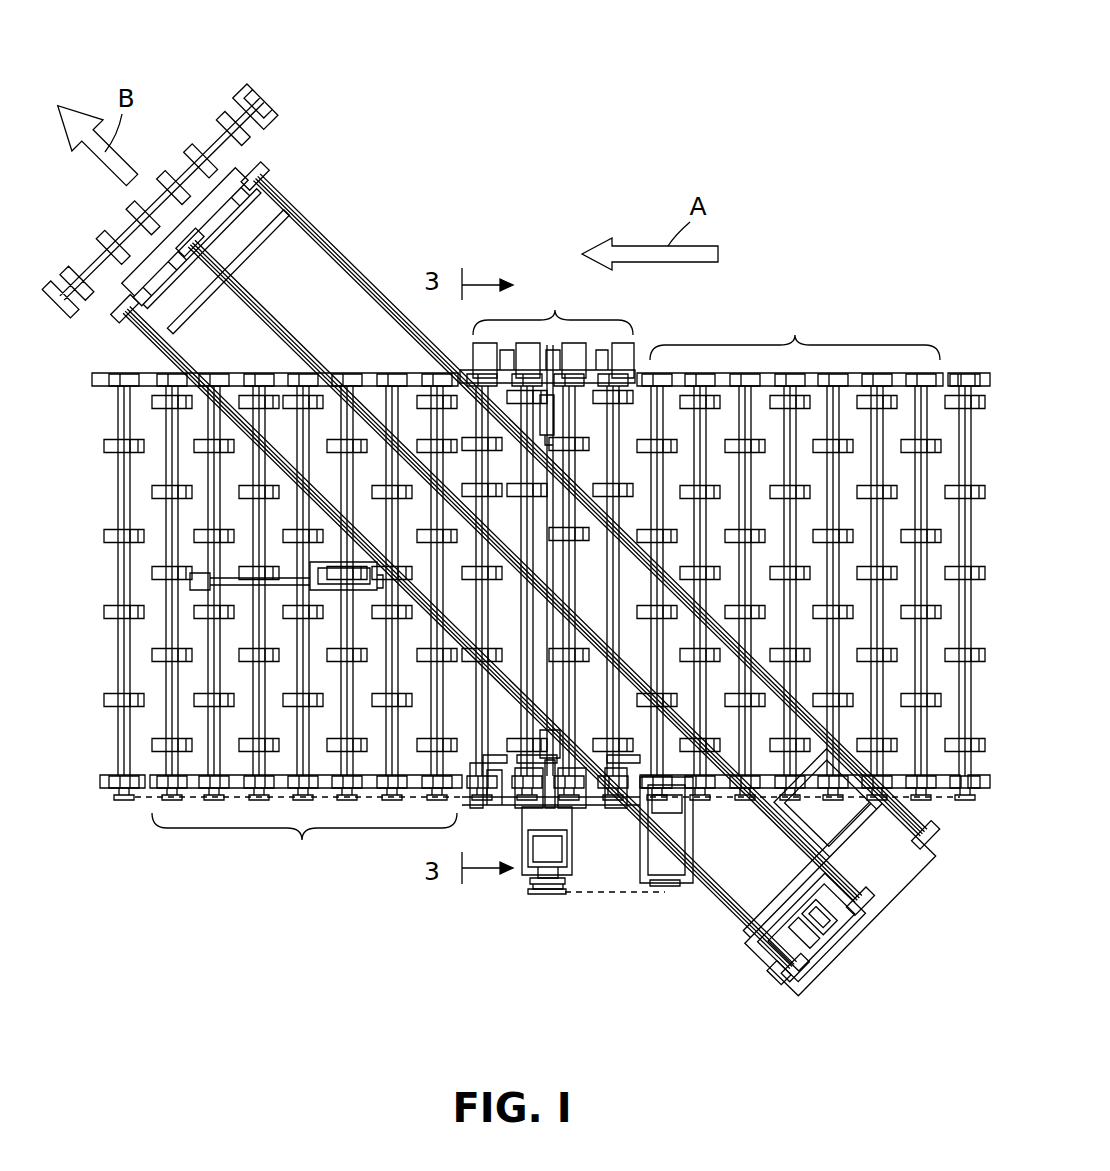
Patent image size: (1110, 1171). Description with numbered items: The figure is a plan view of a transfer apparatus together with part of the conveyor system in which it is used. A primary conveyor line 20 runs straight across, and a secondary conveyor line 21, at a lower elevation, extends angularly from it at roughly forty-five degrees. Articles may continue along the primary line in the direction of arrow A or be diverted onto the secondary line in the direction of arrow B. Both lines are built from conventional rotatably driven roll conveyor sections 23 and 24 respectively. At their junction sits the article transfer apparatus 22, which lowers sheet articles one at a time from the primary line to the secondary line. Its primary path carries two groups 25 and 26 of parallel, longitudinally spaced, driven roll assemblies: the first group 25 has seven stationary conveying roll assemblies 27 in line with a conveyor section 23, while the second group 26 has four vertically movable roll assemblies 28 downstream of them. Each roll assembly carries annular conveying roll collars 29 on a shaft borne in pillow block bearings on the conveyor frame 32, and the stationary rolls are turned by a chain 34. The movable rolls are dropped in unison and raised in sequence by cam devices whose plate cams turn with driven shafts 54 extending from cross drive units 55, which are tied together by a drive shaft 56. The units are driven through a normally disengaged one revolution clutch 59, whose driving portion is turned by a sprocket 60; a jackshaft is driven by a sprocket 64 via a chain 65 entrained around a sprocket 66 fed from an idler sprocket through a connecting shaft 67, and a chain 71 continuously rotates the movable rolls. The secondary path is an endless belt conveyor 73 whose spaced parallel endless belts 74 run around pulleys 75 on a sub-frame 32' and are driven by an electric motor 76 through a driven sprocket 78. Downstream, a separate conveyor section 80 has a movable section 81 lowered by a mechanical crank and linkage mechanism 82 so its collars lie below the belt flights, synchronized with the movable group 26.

The primary conveyor line 20 is at (968, 360).
The secondary conveyor line 21 is at (258, 76).
The article transfer apparatus 22 is at (729, 945).
The roll conveyor section 23 is at (104, 386).
The roll conveyor section 24 is at (257, 127).
The first group of roll assemblies 25 is at (817, 554).
The second group of roll assemblies 26 is at (550, 543).
The conveying roll assembly 27 is at (657, 503).
The conveyor roll assembly 28 is at (612, 455).
The conveying roll collar 29 is at (862, 490).
The conveyor frame 32 is at (815, 809).
The sub-frame 32' is at (840, 927).
The chain 34 is at (812, 795).
The driven shaft 54 is at (604, 360).
The cross drive unit 55 is at (528, 344).
The drive shaft 56 is at (545, 548).
The one revolution clutch 59 is at (557, 853).
The sprocket 60 is at (535, 884).
The sprocket 64 is at (538, 895).
The base line 65 is at (606, 895).
The sprocket 66 is at (672, 888).
The connecting shaft 67 is at (668, 812).
The chain 71 is at (557, 758).
The endless belt conveyor 73 is at (333, 230).
The endless belt 74 is at (297, 347).
The pulley 75 is at (277, 182).
The electric motor 76 is at (825, 937).
The driven sprocket 78 is at (773, 970).
The conveyor section 80 is at (150, 818).
The movable section 81 is at (283, 623).
The mechanical crank and linkage mechanism 82 is at (333, 602).